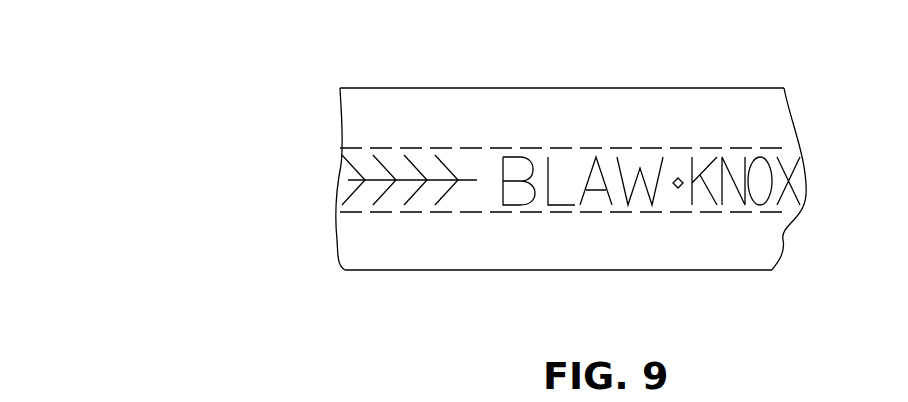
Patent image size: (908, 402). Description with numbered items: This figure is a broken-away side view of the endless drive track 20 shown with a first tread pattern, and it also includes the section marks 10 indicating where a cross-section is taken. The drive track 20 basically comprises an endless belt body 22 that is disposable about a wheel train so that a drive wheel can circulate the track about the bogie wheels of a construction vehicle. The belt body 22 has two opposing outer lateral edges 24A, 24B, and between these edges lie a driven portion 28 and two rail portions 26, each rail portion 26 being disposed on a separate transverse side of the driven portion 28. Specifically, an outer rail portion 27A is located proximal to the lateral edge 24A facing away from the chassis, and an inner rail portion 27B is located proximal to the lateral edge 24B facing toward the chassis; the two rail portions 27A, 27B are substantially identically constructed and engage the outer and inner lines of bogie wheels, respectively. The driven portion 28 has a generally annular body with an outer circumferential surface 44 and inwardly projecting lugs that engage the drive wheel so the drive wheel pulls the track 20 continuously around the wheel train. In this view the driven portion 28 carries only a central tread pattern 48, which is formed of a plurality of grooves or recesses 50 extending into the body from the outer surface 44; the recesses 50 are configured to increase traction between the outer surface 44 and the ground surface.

The section line 10 is at (459, 80).
The endless drive track 20 is at (292, 44).
The belt body 22 is at (650, 275).
The outer lateral edge 24A is at (557, 270).
The inner lateral edge 24B is at (614, 89).
The rail portion 26 is at (742, 107).
The outer rail portion 27A is at (764, 247).
The inner rail portion 27B is at (700, 100).
The driven portion 28 is at (472, 196).
The outer circumferential surface 44 is at (392, 221).
The tread pattern 48 is at (645, 152).
The recesses 50 is at (447, 168).